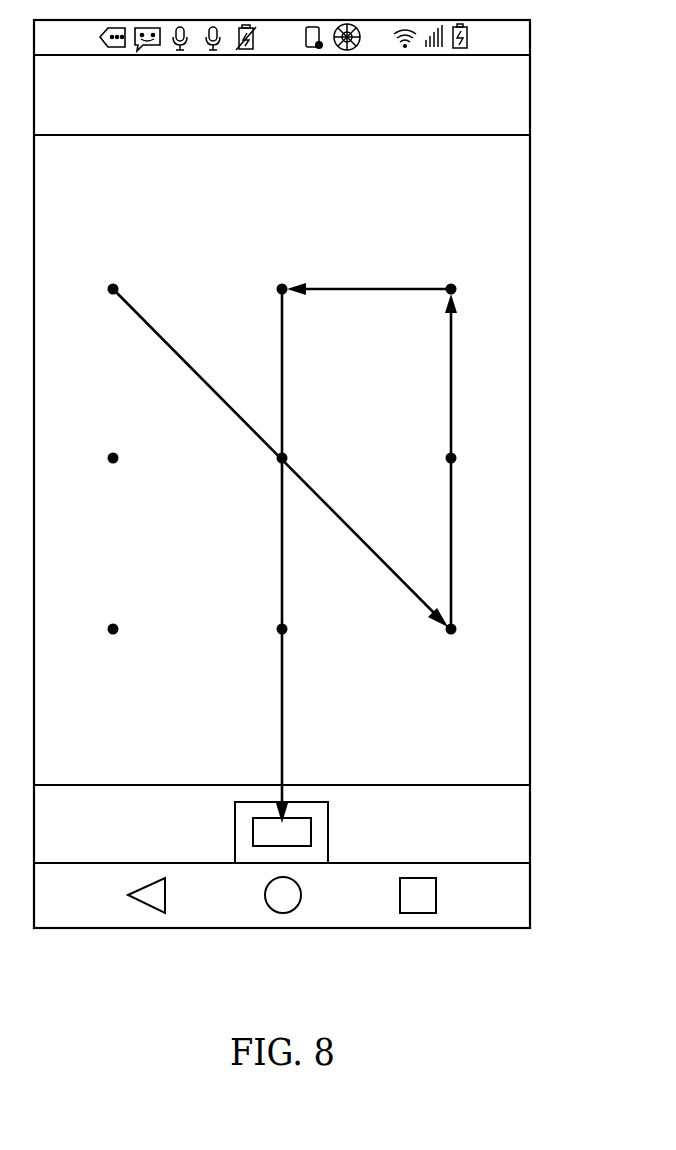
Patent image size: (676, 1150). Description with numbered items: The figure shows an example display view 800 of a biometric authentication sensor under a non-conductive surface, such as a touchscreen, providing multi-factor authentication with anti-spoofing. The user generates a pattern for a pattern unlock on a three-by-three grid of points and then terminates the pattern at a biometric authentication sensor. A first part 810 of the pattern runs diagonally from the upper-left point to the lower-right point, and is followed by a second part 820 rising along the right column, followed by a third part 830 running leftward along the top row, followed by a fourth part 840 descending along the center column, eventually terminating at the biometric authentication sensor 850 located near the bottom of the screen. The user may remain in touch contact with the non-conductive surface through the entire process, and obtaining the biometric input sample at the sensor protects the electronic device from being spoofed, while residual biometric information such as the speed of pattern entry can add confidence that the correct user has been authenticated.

The display view 800 is at (498, 996).
The first part of the pattern 810 is at (168, 348).
The second part of the pattern 820 is at (452, 516).
The third part of the pattern 830 is at (366, 288).
The fourth part of the pattern 840 is at (281, 556).
The biometric authentication sensor 850 is at (248, 831).